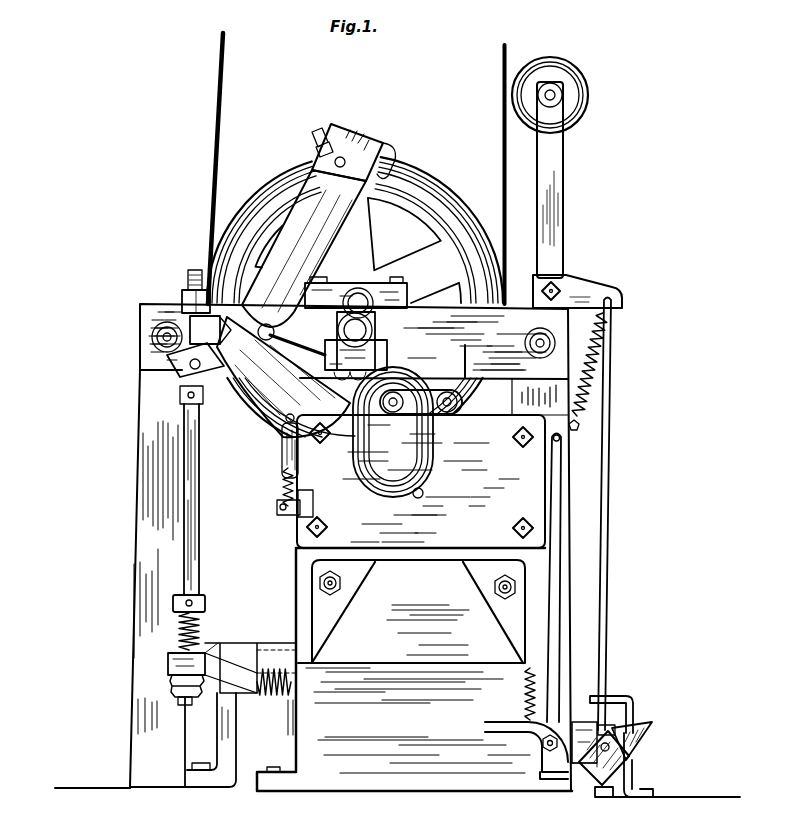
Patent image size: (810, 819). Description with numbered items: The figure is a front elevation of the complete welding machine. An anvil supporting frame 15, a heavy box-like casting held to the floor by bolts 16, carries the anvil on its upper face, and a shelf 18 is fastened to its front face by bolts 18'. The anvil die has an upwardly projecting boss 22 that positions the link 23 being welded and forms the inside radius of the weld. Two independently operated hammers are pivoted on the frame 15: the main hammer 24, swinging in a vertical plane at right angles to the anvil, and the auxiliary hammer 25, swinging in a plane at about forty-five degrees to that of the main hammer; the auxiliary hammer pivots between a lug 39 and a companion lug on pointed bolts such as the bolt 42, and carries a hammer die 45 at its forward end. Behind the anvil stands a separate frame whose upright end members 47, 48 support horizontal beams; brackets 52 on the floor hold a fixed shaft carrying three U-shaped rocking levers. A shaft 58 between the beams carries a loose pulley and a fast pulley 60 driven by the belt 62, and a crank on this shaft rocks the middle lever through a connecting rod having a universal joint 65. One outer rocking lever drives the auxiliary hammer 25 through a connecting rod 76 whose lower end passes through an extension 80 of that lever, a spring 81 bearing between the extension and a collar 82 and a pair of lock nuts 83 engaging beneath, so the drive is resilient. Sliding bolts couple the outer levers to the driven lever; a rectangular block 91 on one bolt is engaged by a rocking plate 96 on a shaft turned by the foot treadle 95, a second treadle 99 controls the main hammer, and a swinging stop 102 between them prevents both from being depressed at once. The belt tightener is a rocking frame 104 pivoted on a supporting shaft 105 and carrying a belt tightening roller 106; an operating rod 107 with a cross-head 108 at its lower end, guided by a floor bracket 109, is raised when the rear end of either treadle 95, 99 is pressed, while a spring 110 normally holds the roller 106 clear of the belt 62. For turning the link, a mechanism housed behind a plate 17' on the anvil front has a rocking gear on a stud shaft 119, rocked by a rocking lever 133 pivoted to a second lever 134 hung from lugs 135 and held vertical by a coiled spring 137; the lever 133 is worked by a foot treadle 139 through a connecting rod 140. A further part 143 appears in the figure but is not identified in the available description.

The anvil supporting frame 15 is at (414, 669).
The bolts 16 is at (270, 767).
The plate 17' is at (421, 481).
The shelf 18 is at (411, 608).
The bolts 18' is at (487, 608).
The boss 22 is at (437, 418).
The link 23 is at (408, 413).
The main hammer 24 is at (457, 358).
The auxiliary hammer 25 is at (318, 202).
The lug 39 is at (270, 383).
The bolt 42 is at (197, 325).
The hammer die 45 is at (384, 165).
The upright end member 47 is at (140, 760).
The upright end member 48 is at (580, 403).
The brackets 52 is at (233, 738).
The shaft 58 is at (360, 303).
The belt pulley 60 is at (423, 193).
The belt 62 is at (213, 177).
The universal joint 65 is at (383, 357).
The connecting rod 76 is at (186, 490).
The extension 80 is at (170, 666).
The spring 81 is at (199, 625).
The collar 82 is at (205, 603).
The lock nuts 83 is at (173, 683).
The rectangular block 91 is at (290, 673).
The foot-controlled treadle 95 is at (627, 753).
The rocking plate 96 is at (274, 717).
The foot treadle 99 is at (576, 728).
The swinging stop 102 is at (622, 762).
The rocking frame 104 is at (552, 222).
The supporting shaft 105 is at (558, 280).
The belt tightening roller 106 is at (585, 100).
The operating rod 107 is at (603, 497).
The cross-head 108 is at (608, 727).
The bracket 109 is at (630, 782).
The spring 110 is at (593, 378).
The stud shaft 119 is at (423, 497).
The rocking lever 133 is at (573, 428).
The lever 134 is at (283, 455).
The lugs 135 is at (282, 437).
The coiled spring 137 is at (280, 490).
The foot treadle 139 is at (500, 727).
The connecting rod 140 is at (563, 544).
The return spring 143 is at (523, 677).